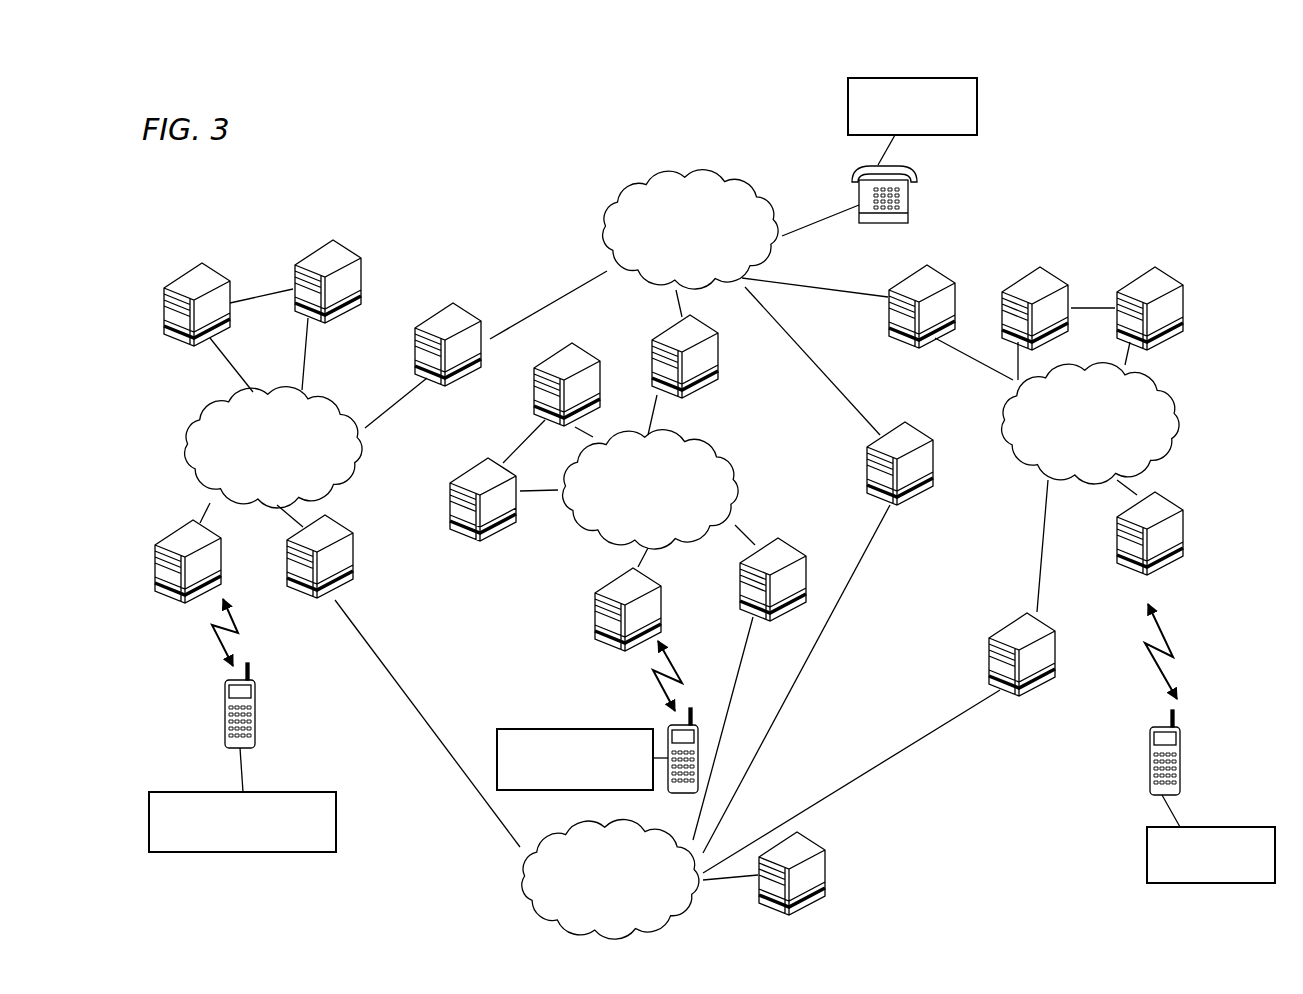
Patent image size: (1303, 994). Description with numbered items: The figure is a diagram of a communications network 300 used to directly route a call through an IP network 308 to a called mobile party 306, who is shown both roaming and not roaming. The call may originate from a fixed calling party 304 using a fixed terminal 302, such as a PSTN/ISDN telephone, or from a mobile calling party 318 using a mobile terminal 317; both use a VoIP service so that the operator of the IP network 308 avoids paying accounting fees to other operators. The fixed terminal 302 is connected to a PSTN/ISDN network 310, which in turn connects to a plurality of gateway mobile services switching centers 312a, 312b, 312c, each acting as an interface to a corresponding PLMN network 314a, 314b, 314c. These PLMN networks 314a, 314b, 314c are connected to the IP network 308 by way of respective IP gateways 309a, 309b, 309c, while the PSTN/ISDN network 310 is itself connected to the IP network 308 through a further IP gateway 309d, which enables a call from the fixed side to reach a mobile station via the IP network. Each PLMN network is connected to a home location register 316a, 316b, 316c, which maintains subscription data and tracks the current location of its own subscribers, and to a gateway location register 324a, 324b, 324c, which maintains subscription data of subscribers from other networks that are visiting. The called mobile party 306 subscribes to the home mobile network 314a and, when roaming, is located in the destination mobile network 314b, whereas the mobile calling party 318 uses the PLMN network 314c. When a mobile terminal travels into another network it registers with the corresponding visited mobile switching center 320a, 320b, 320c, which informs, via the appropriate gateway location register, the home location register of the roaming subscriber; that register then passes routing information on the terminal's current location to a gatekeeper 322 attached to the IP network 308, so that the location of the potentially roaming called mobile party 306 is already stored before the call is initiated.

The communications network 300 is at (1180, 156).
The fixed terminal 302 is at (853, 172).
The fixed calling party 304 is at (924, 137).
The called mobile party 306 is at (292, 792).
The IP network 308 is at (512, 878).
The IP gateway 309a is at (340, 533).
The IP gateway 309b is at (790, 550).
The IP gateway 309c is at (1040, 630).
The IP gateway 309d is at (925, 440).
The PSTN/ISDN network 310 is at (602, 199).
The gateway mobile services switching center 312a is at (465, 308).
The gateway mobile services switching center 312b is at (707, 335).
The gateway mobile services switching center 312c is at (942, 282).
The PLMN network 314a is at (192, 411).
The PLMN network 314b is at (720, 443).
The PLMN network 314c is at (1165, 374).
The home location register 316a is at (212, 282).
The home location register 316b is at (585, 363).
The home location register 316c is at (1170, 282).
The mobile terminal 317 is at (1180, 752).
The mobile calling party 318 is at (1213, 884).
The visited mobile switching center 320a is at (210, 540).
The visited mobile switching center 320b is at (650, 587).
The visited mobile switching center 320c is at (1170, 508).
The gatekeeper 322 is at (812, 848).
The gateway location register 324a is at (347, 257).
The gateway location register 324b is at (470, 472).
The gateway location register 324c is at (1057, 277).